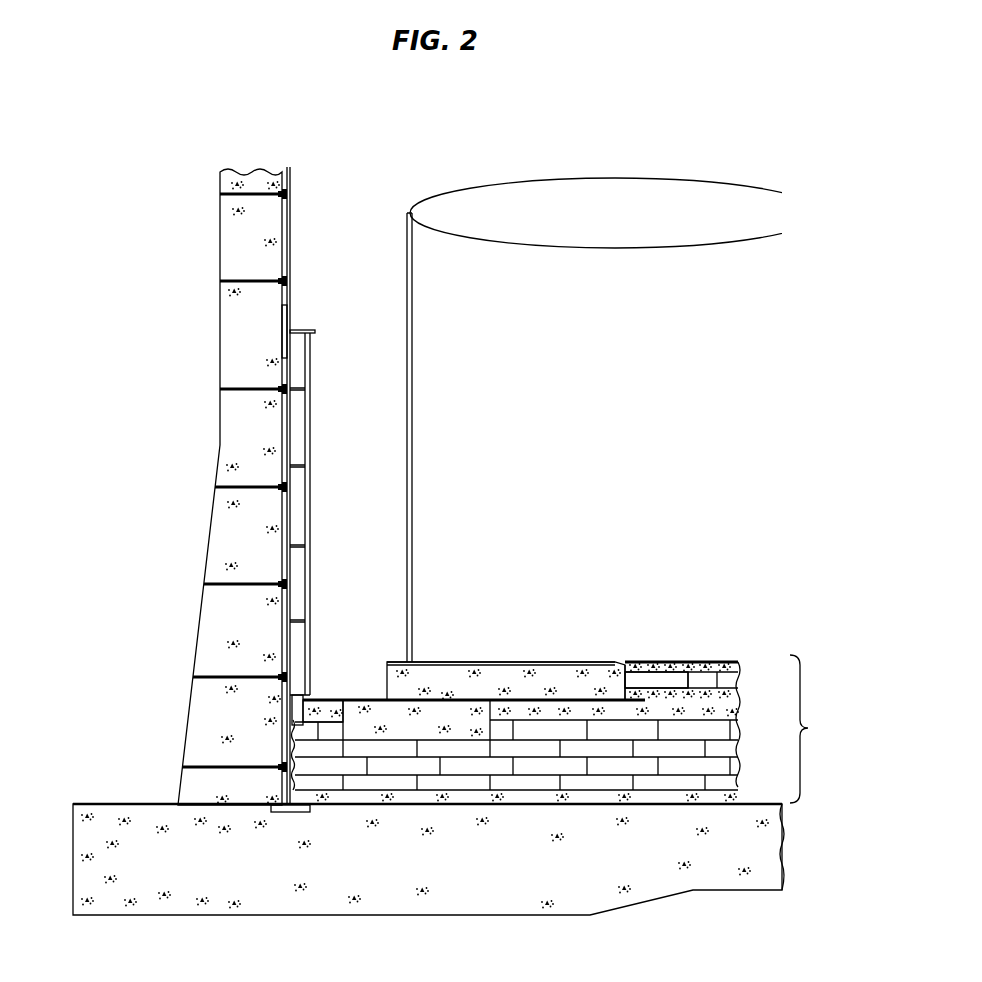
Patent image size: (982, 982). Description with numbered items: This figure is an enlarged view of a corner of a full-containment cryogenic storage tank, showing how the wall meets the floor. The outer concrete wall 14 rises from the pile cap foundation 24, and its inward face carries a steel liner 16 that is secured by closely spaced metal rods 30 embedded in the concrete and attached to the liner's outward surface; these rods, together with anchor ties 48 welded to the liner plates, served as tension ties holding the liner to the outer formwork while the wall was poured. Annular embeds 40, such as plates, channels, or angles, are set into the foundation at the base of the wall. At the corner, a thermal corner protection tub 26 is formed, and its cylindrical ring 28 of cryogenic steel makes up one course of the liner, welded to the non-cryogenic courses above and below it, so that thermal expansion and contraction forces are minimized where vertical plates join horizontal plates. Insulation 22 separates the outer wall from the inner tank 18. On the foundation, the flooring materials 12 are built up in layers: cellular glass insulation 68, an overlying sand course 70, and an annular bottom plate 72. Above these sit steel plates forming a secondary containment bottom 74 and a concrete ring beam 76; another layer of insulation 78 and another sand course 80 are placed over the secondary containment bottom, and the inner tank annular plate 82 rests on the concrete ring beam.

The flooring materials 12 is at (806, 729).
The outer concrete wall 14 is at (254, 173).
The steel liner 16 is at (293, 206).
The inner tank 18 is at (413, 372).
The insulation 22 is at (362, 235).
The pile cap foundation 24 is at (142, 905).
The thermal corner protection tub 26 is at (316, 332).
The cylindrical ring 28 is at (288, 313).
The metal rods 30 is at (232, 281).
The annular embeds 40 is at (276, 812).
The anchor ties 48 is at (283, 290).
The cellular glass insulation 68 is at (732, 742).
The sand course 70 is at (580, 712).
The annular bottom plate 72 is at (483, 700).
The secondary containment bottom 74 is at (735, 697).
The concrete ring beam 76 is at (436, 672).
The layer of insulation 78 is at (676, 680).
The sand course 80 is at (718, 690).
The inner tank annular plate 82 is at (527, 660).